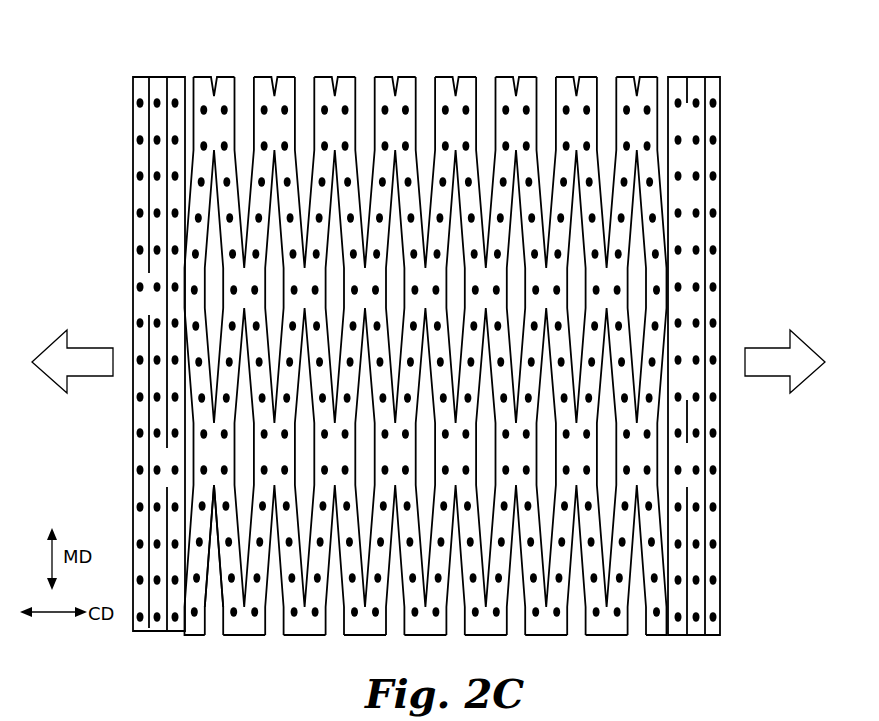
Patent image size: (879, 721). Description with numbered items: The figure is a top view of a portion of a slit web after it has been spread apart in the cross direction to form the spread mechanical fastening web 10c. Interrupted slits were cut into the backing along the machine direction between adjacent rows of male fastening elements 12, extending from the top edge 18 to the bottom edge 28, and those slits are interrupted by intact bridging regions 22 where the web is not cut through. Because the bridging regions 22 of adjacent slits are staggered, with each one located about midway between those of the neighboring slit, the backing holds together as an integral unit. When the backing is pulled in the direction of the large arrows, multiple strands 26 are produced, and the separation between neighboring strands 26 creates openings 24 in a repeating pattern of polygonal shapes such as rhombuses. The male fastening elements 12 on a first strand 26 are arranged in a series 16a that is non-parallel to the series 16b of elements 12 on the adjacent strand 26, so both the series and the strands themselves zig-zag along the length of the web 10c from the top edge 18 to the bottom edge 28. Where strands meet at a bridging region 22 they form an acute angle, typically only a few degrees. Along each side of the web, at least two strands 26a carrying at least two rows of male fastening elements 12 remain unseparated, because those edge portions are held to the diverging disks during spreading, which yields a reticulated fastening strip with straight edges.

The spread mechanical fastening web 10c is at (104, 241).
The male fastening elements 12 is at (140, 176).
The series of male fastening elements on a first strand 16a is at (200, 62).
The series of male fastening elements on a second strand 16b is at (218, 62).
The top edge 18 is at (586, 74).
The intact bridging regions 22 is at (738, 271).
The openings 24 is at (662, 427).
The strands 26 is at (625, 515).
The edge strands 26a is at (724, 666).
The bottom edge 28 is at (608, 636).